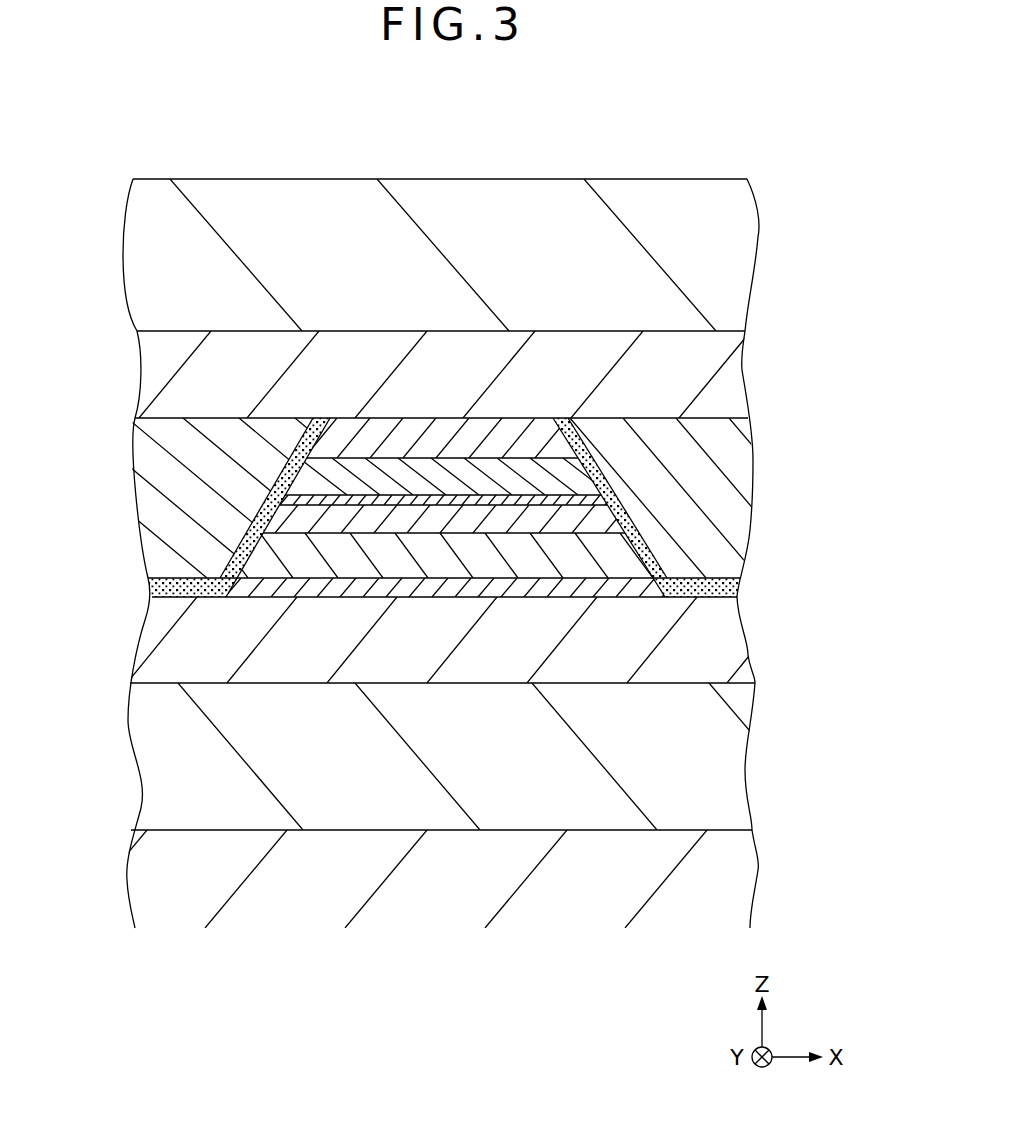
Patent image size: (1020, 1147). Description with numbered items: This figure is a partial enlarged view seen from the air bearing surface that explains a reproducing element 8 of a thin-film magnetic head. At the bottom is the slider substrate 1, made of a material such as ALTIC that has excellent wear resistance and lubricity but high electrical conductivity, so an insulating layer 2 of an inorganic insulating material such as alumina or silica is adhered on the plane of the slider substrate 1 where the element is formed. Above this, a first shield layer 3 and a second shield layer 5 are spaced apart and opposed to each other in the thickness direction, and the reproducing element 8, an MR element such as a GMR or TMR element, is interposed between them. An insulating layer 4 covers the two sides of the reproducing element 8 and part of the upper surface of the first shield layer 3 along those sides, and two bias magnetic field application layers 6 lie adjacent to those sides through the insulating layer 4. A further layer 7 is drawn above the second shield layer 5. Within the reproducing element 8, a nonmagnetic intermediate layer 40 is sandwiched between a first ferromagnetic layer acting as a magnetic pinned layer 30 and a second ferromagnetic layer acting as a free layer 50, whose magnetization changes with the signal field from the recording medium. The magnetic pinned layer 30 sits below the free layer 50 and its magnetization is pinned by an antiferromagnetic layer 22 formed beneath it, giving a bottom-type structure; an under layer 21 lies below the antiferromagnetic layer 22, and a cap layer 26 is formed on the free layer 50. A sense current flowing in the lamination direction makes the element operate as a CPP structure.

The slider substrate 1 is at (732, 905).
The insulating layer 2 is at (732, 768).
The first shield layer 3 is at (732, 640).
The insulating layer 4 is at (147, 586).
The second shield layer 5 is at (730, 371).
The bias magnetic field application layer 6 is at (147, 492).
The upper insulating layer 7 is at (730, 260).
The reproducing element 8 is at (437, 409).
The under layer 21 is at (360, 563).
The antiferromagnetic layer 22 is at (340, 582).
The cap layer 26 is at (377, 433).
The magnetic pinned layer 30 is at (602, 520).
The nonmagnetic intermediate layer 40 is at (597, 500).
The free layer 50 is at (573, 480).